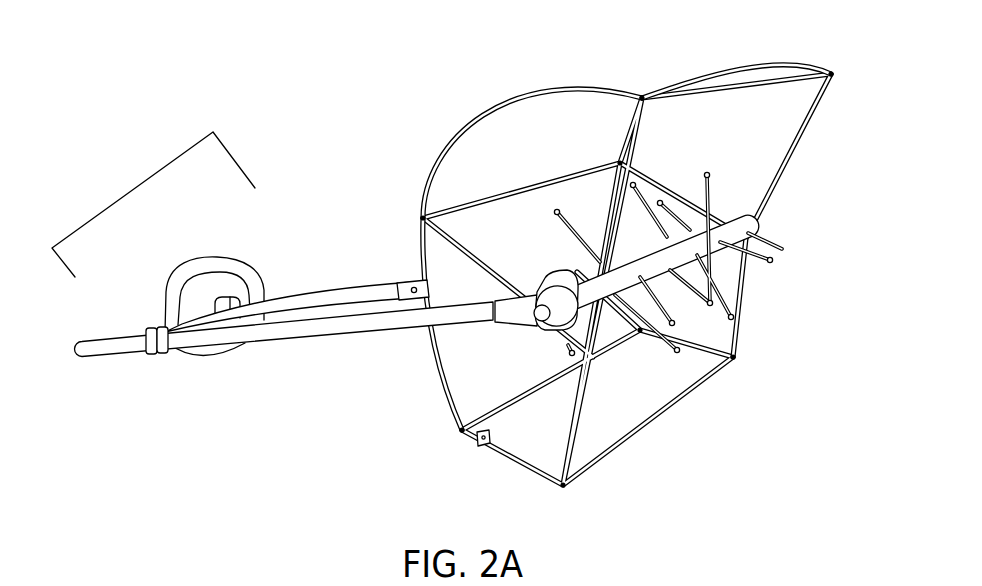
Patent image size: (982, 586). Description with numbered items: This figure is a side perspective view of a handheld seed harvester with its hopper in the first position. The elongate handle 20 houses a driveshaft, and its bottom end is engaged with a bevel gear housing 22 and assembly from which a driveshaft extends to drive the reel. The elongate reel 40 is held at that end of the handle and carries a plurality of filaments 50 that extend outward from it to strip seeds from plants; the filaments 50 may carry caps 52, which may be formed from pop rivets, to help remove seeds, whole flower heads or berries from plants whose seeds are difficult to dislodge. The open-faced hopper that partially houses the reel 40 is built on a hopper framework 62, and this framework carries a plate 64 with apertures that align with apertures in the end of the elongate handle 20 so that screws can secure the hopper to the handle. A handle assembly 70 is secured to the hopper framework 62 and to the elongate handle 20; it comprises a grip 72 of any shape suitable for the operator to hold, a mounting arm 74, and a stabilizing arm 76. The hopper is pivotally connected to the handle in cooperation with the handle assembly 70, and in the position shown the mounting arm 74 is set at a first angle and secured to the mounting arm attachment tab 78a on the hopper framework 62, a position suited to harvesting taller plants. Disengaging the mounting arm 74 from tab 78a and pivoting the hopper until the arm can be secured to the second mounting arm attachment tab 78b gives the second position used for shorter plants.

The elongate handle 20 is at (297, 343).
The bevel gear housing 22 is at (493, 322).
The elongate reel 40 is at (738, 262).
The filaments 50 is at (740, 290).
The caps 52 is at (743, 343).
The hopper framework 62 is at (808, 68).
The plate 64 is at (550, 274).
The handle assembly 70 is at (132, 190).
The grip 72 is at (182, 266).
The mounting arm 74 is at (293, 297).
The stabilizing arm 76 is at (193, 320).
The mounting arm attachment tab 78a is at (417, 282).
The mounting arm attachment tab 78b is at (480, 445).